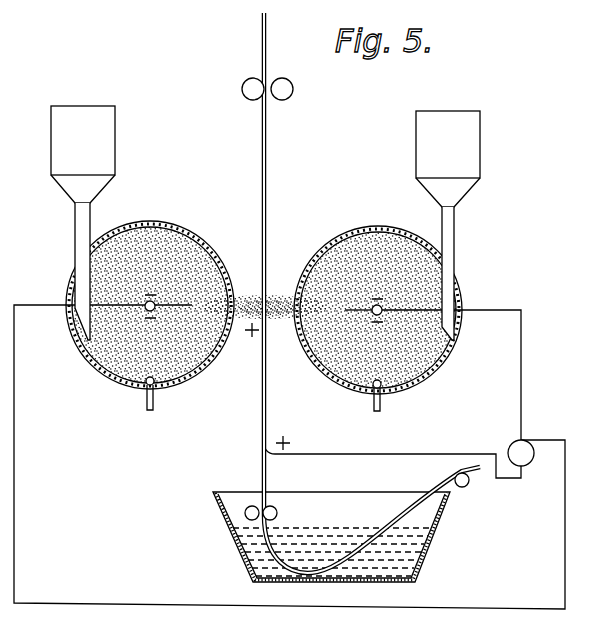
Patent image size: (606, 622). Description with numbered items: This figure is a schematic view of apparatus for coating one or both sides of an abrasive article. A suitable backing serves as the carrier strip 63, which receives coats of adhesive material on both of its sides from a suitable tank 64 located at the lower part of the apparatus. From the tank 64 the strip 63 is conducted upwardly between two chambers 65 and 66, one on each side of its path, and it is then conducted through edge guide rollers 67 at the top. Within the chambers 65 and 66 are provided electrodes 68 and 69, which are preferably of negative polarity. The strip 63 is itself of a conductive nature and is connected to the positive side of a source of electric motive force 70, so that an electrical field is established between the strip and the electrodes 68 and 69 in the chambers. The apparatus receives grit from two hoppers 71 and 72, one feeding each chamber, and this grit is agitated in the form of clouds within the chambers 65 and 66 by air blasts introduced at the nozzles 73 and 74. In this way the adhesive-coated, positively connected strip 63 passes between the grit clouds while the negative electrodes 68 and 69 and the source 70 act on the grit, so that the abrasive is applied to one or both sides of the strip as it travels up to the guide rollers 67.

The carrier strip 63 is at (262, 396).
The tank 64 is at (420, 552).
The chamber 65 is at (199, 247).
The chamber 66 is at (369, 226).
The edge guide rollers 67 is at (285, 78).
The electrode 68 is at (146, 310).
The electrode 69 is at (367, 303).
The source of electric motive force 70 is at (523, 446).
The hopper 71 is at (91, 214).
The hopper 72 is at (461, 194).
The nozzle 73 is at (137, 388).
The nozzle 74 is at (384, 391).